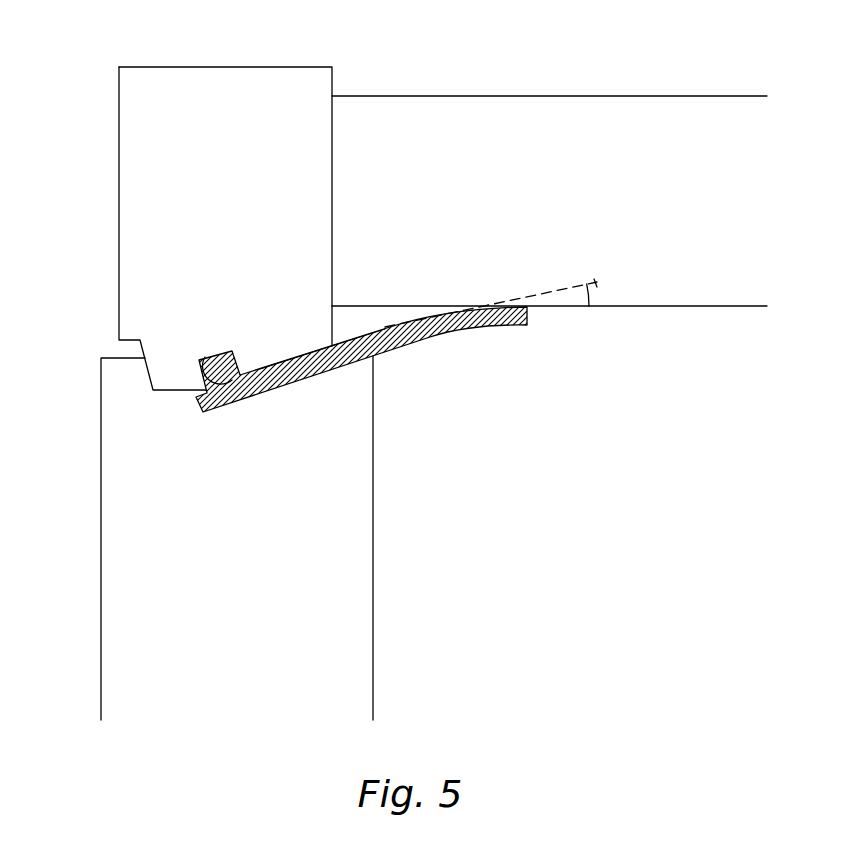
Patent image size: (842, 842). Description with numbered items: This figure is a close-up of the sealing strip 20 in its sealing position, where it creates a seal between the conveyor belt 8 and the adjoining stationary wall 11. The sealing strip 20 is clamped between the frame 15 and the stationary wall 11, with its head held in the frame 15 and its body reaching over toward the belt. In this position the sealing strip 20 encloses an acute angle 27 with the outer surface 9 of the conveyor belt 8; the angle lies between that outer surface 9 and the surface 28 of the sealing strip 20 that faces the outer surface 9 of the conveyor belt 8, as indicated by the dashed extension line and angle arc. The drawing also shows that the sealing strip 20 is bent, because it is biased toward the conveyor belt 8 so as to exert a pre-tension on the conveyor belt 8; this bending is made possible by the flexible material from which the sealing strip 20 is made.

The conveyor belt 8 is at (570, 127).
The outer surface of the conveyor belt 9 is at (663, 307).
The stationary wall 11 is at (340, 583).
The frame 15 is at (145, 193).
The sealing strip 20 is at (432, 337).
The acute angle 27 is at (392, 326).
The surface of the sealing strip 28 is at (355, 342).